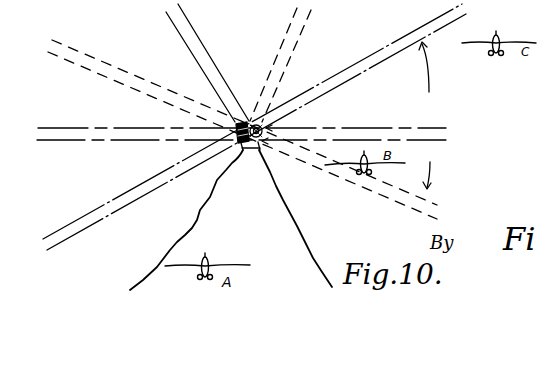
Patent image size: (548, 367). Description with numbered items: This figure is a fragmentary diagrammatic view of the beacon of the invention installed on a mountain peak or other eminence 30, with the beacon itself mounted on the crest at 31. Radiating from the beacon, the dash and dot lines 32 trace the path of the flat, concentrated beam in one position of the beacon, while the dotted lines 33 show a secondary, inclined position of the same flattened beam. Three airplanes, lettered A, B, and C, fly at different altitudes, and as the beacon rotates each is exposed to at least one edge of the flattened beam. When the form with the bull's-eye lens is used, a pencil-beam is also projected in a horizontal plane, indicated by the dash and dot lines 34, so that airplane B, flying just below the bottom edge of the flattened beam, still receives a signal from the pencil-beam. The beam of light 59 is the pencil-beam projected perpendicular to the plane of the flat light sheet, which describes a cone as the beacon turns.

The mountain peak 30 is at (269, 200).
The beacon 31 is at (240, 153).
The dash and dot lines 32 is at (358, 66).
The dotted lines 33 is at (139, 78).
The dash and dot lines 34 is at (395, 132).
The beam of light 59 is at (289, 58).